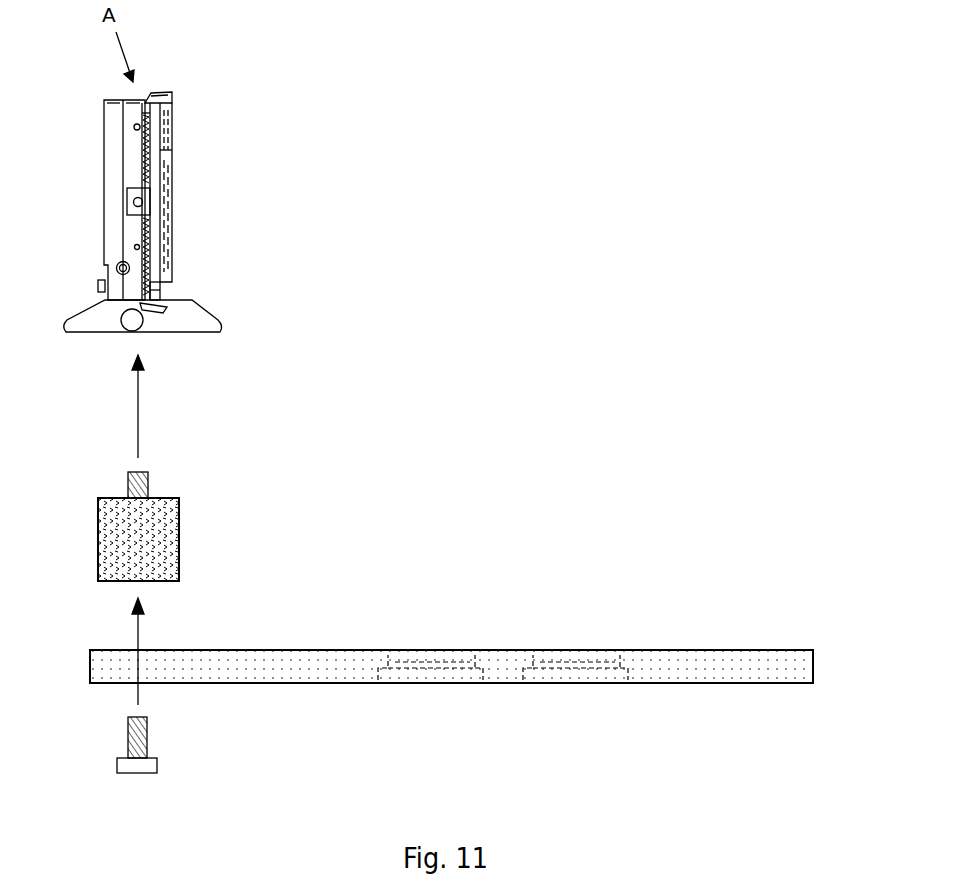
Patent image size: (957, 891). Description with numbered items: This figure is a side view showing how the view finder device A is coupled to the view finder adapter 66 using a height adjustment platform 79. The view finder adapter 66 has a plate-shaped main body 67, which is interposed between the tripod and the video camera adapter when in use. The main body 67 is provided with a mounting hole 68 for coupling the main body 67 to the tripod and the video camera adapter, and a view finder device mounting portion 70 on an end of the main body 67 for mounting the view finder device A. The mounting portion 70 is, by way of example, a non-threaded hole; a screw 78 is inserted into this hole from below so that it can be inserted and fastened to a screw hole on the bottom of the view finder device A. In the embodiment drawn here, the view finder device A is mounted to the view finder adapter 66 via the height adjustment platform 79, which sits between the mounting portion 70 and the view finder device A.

The view finder adapter 66 is at (793, 636).
The main body 67 is at (187, 675).
The mounting hole 68 is at (420, 624).
The view finder device mounting portion 70 is at (108, 702).
The screw 78 is at (138, 770).
The height adjustment platform 79 is at (172, 520).